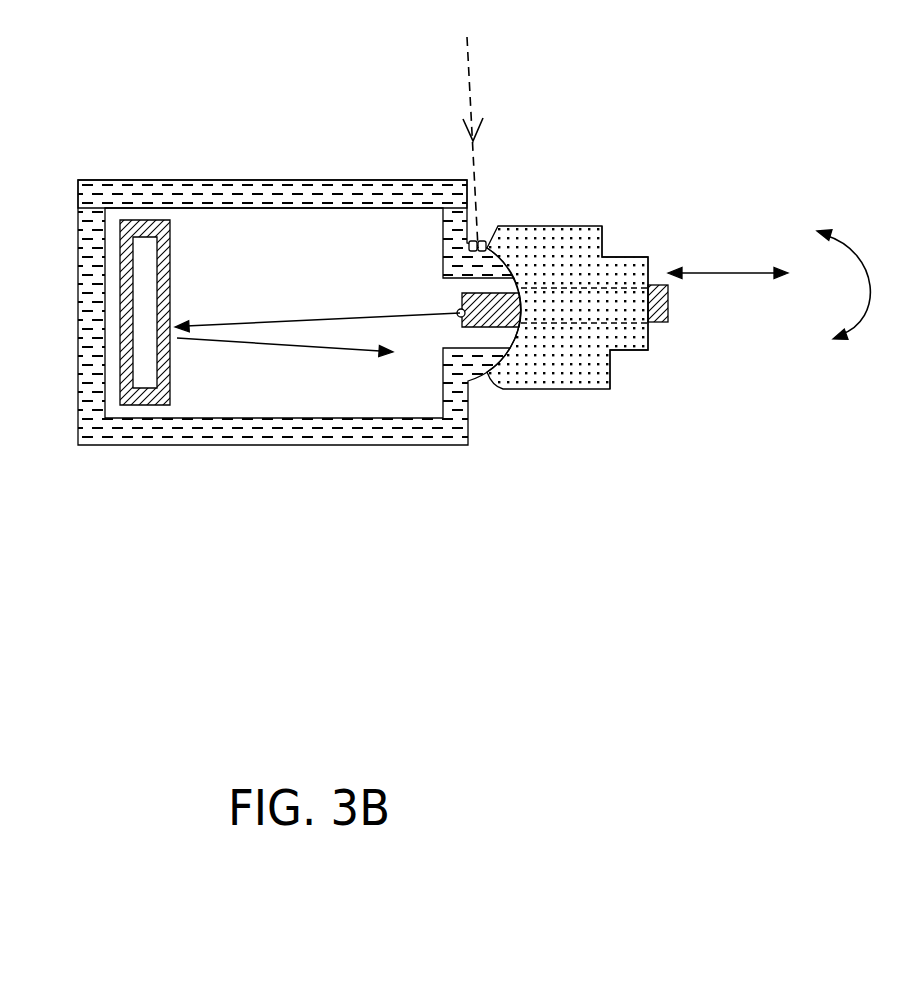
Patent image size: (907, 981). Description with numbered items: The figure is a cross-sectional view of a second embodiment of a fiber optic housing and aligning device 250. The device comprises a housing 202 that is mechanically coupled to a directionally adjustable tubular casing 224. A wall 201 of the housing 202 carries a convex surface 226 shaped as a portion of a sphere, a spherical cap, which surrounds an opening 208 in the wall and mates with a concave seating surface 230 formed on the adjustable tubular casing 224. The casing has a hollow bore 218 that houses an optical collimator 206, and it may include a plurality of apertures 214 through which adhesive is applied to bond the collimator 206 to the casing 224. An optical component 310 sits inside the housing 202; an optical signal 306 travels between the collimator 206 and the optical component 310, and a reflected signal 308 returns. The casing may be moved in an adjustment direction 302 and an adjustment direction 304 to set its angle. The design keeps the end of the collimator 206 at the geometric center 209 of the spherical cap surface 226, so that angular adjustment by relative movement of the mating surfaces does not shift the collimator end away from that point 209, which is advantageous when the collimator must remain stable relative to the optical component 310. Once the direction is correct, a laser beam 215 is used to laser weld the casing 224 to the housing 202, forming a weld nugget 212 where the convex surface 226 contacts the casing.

The fiber optic housing and aligning device 250 is at (137, 94).
The wall 201 is at (468, 437).
The housing 202 is at (300, 180).
The optical component 310 is at (172, 375).
The concave seating surface 230 is at (524, 285).
The directionally adjustable tubular casing 224 is at (590, 214).
The apertures 214 is at (622, 257).
The hollow bore 218 is at (587, 328).
The opening 208 is at (441, 293).
The geometric center 209 is at (457, 312).
The optical collimator 206 is at (460, 332).
The weld nugget 212 is at (483, 242).
The laser beam 215 is at (467, 76).
The convex surface 226 is at (476, 377).
The optical signal 306 is at (285, 322).
The reflected signal 308 is at (330, 349).
The adjustment direction 304 is at (725, 268).
The adjustment direction 302 is at (846, 236).